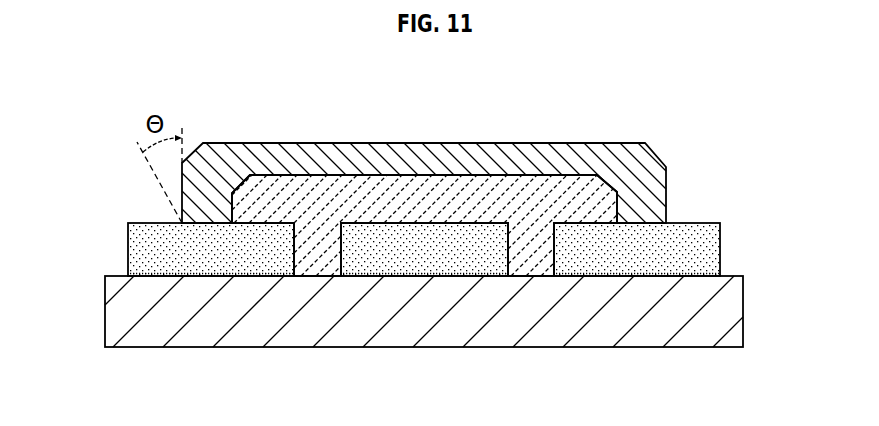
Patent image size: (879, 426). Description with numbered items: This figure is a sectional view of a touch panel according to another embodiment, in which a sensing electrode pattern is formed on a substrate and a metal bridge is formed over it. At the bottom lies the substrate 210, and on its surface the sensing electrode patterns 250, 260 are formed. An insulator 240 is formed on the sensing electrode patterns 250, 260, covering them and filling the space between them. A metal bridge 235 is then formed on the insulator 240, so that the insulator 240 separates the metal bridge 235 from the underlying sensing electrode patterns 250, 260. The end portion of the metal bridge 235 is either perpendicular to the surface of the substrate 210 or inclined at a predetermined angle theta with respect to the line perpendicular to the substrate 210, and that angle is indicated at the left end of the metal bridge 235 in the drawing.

The substrate 210 is at (725, 312).
The metal bridge 235 is at (650, 158).
The insulator 240 is at (524, 180).
The sensing electrode pattern 250 is at (128, 251).
The sensing electrode pattern 260 is at (428, 250).